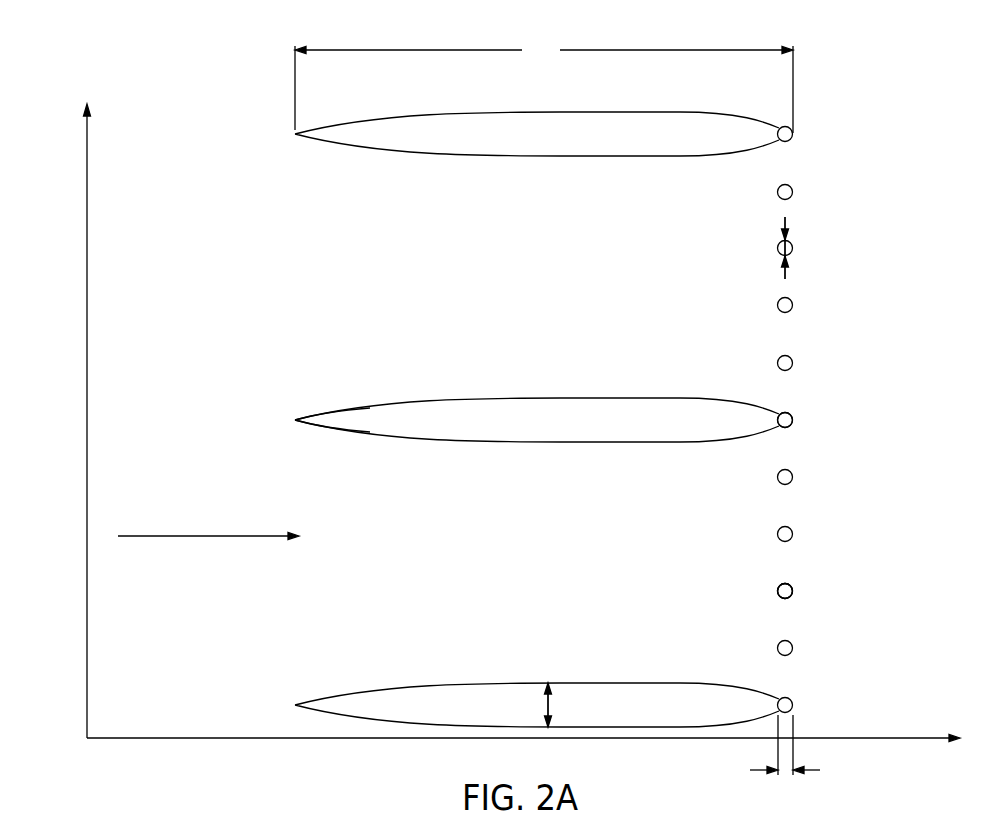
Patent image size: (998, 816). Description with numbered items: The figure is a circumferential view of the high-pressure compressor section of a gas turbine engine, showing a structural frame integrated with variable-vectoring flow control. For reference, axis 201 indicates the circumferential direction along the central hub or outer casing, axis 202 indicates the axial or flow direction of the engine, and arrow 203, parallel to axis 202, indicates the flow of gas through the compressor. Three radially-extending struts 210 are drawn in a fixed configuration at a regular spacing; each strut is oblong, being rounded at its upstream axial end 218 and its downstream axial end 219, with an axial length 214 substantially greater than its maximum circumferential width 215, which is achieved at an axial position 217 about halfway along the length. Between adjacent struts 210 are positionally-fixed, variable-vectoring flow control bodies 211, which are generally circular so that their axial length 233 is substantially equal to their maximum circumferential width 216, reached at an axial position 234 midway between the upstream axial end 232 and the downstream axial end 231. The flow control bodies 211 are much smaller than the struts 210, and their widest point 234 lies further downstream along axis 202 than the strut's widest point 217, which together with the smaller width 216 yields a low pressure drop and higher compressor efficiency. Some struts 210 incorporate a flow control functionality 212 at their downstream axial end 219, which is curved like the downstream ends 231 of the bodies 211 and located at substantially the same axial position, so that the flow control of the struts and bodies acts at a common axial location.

The axis 201 is at (88, 156).
The axis 202 is at (922, 737).
The arrow 203 is at (265, 535).
The strut 210 is at (650, 112).
The flow control body 211 is at (795, 190).
The flow control functionality 212 is at (793, 134).
The axial length 214 is at (544, 85).
The maximum circumferential width 215 is at (545, 706).
The maximum circumferential width 216 is at (788, 278).
The axial position 217 is at (548, 682).
The upstream axial end 218 is at (291, 419).
The downstream axial end 219 is at (795, 424).
The downstream axial end 231 is at (792, 595).
The upstream axial end 232 is at (778, 595).
The axial length 233 is at (815, 771).
The axial position 234 is at (780, 246).